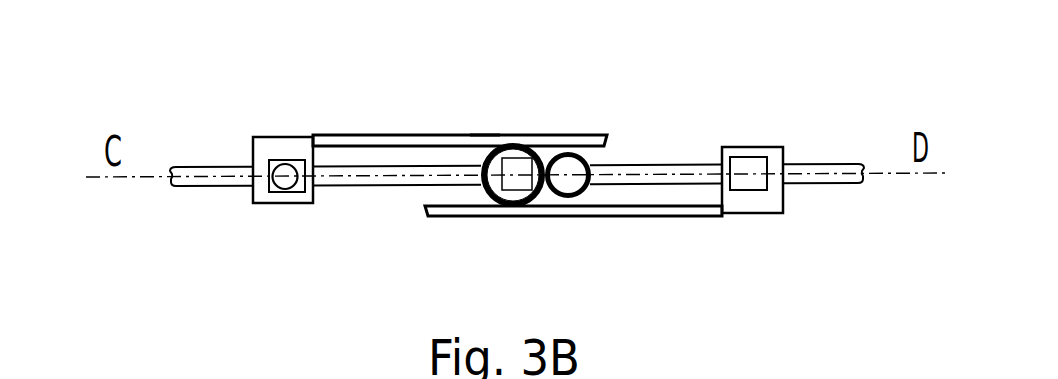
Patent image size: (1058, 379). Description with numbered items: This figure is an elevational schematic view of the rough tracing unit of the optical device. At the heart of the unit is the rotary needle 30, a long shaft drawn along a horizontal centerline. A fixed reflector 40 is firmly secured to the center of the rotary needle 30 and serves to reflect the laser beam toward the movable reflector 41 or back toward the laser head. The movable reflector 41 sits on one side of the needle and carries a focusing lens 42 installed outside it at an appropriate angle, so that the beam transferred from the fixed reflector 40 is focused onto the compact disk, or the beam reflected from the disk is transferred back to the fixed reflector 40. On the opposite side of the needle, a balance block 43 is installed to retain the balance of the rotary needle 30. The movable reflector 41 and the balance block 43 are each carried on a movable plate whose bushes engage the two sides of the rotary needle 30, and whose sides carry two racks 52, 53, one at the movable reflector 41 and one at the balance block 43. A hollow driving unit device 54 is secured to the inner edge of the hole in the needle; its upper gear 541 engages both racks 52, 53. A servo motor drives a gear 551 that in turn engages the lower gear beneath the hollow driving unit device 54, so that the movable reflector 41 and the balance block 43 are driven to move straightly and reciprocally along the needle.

The rotary needle 30 is at (828, 165).
The fixed reflector 40 is at (523, 166).
The movable reflector 41 is at (323, 135).
The focusing lens 42 is at (283, 182).
The balance block 43 is at (753, 185).
The rack 52 is at (485, 135).
The rack 53 is at (698, 209).
The hollow driving unit device 54 is at (527, 193).
The upper gear 541 is at (490, 186).
The gear 551 is at (583, 195).